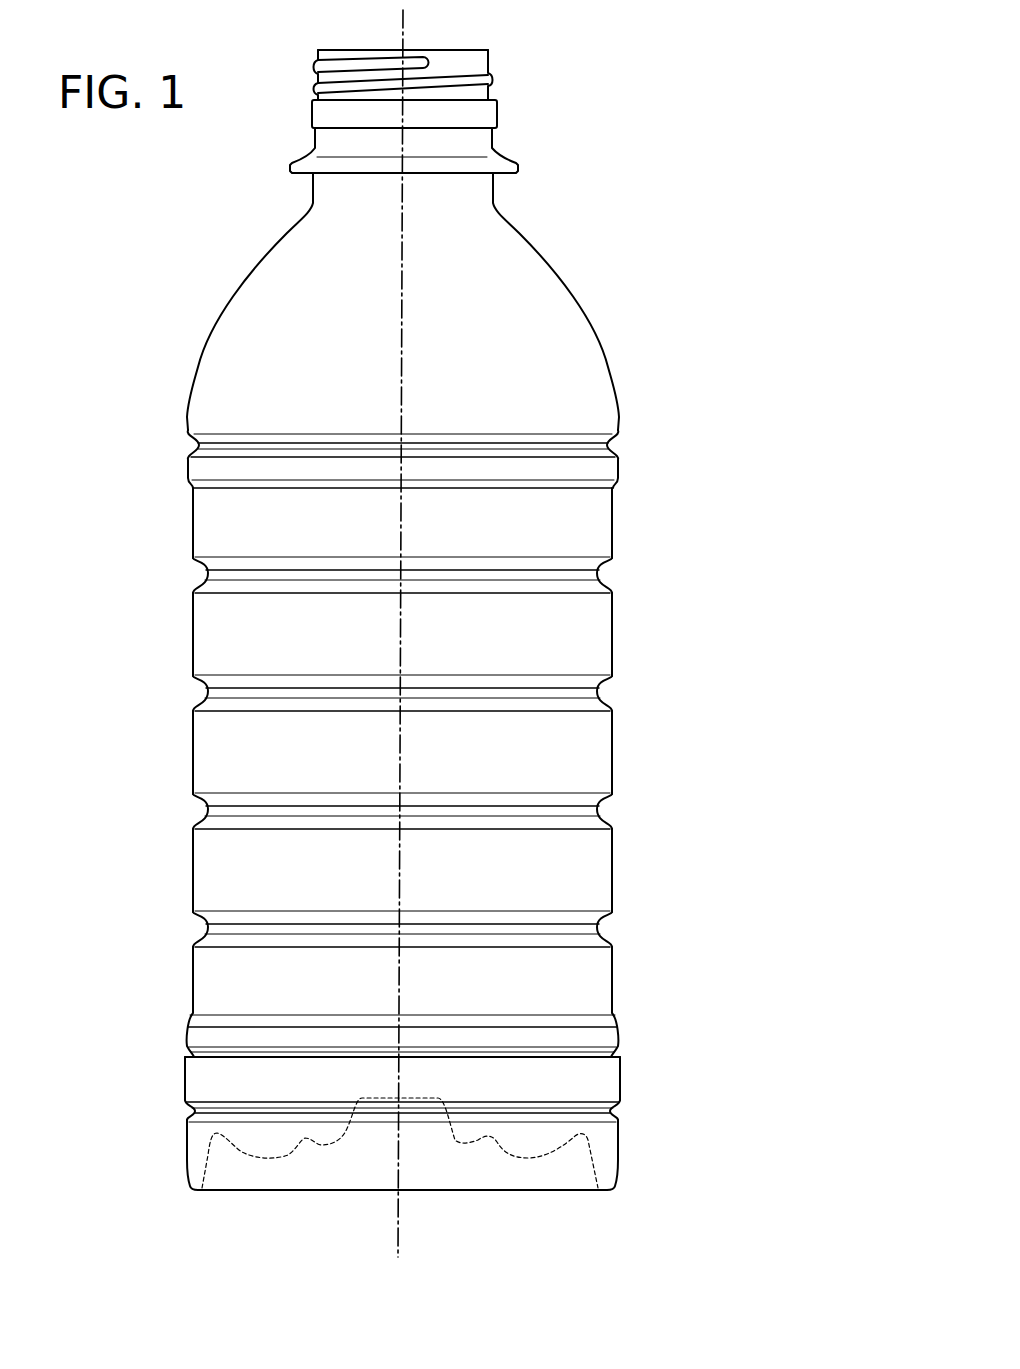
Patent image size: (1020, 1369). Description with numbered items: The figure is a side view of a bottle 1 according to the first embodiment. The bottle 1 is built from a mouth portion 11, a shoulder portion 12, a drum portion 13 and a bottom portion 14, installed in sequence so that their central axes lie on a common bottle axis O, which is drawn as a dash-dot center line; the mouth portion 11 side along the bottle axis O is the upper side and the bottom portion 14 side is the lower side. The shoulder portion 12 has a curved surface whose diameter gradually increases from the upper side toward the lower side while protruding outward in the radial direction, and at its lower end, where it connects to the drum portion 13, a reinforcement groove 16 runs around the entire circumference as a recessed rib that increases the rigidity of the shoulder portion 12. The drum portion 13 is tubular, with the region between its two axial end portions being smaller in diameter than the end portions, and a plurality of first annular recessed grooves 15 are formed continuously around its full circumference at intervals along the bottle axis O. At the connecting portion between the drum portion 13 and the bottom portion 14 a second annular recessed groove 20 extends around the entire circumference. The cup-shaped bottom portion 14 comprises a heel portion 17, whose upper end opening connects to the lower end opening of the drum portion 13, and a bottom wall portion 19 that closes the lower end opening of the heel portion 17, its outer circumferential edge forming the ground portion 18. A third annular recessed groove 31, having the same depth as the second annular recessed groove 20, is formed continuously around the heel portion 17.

The bottle 1 is at (693, 130).
The bottle axis O is at (406, 28).
The mouth portion 11 is at (505, 115).
The shoulder portion 12 is at (543, 248).
The drum portion 13 is at (613, 523).
The bottom portion 14 is at (445, 1178).
The first annular recessed grooves 15 is at (206, 573).
The reinforcement groove 16 is at (196, 446).
The heel portion 17 is at (617, 1087).
The ground portion 18 is at (197, 1193).
The bottom wall portion 19 is at (588, 1198).
The second annular recessed groove 20 is at (193, 1053).
The third annular recessed groove 31 is at (195, 1113).